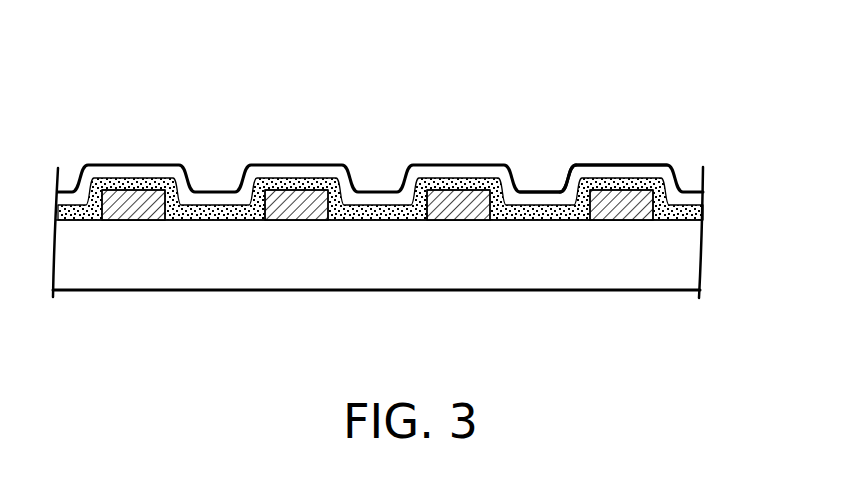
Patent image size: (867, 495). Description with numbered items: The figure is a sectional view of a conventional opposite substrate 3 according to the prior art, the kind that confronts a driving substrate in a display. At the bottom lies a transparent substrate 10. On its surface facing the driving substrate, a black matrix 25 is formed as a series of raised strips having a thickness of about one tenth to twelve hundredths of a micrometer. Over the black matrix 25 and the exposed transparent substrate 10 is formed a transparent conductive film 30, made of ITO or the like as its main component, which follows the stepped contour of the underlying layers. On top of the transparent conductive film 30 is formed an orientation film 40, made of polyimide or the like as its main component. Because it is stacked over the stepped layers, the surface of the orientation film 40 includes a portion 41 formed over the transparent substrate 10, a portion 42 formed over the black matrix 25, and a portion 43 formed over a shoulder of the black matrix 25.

The opposite substrate 3 is at (377, 95).
The transparent substrate 10 is at (692, 263).
The black matrix 25 is at (605, 220).
The transparent conductive film 30 is at (703, 213).
The orientation film 40 is at (703, 192).
The portion formed over the transparent substrate 41 is at (531, 183).
The portion formed over the black matrix 42 is at (652, 163).
The portion formed over a shoulder of the black matrix 43 is at (568, 181).